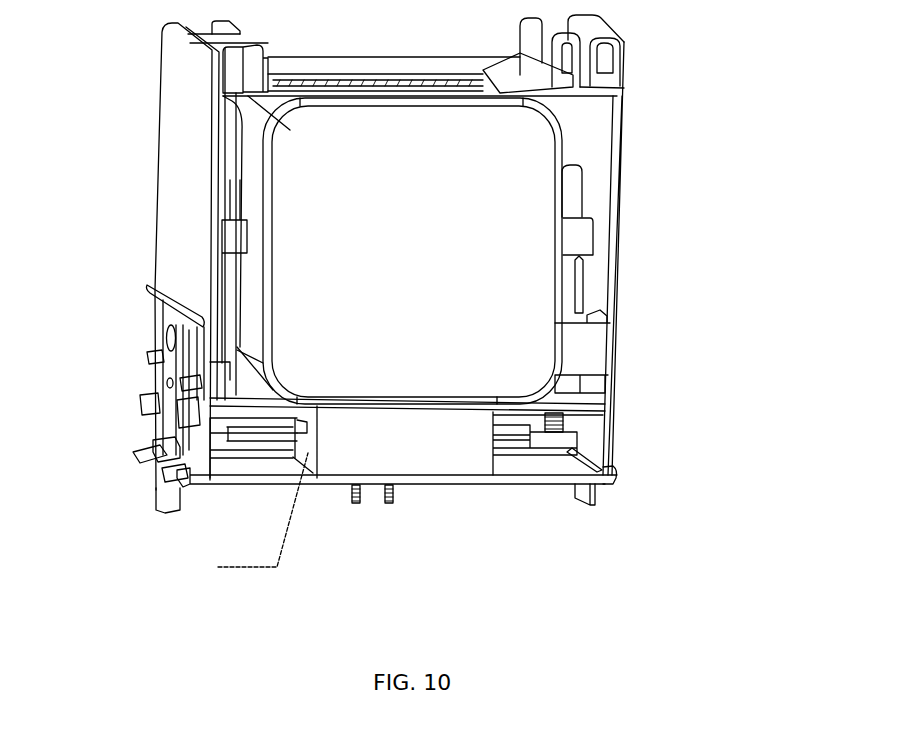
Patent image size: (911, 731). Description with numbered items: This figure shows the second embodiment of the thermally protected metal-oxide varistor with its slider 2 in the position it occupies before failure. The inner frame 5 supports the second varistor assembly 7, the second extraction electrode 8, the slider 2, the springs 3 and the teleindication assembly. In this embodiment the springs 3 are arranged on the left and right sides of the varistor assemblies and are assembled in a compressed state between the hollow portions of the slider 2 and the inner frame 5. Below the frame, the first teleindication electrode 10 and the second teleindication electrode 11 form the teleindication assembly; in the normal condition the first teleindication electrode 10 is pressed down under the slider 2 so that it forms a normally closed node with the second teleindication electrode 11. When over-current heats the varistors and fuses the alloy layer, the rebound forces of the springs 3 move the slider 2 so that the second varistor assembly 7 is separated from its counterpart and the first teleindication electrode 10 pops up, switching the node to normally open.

The slider 2 is at (570, 208).
The springs 3 is at (560, 425).
The inner frame 5 is at (186, 189).
The second varistor assembly 7 is at (157, 340).
The second extraction electrode 8 is at (165, 430).
The first teleindication electrode 10 is at (357, 495).
The second teleindication electrode 11 is at (395, 488).